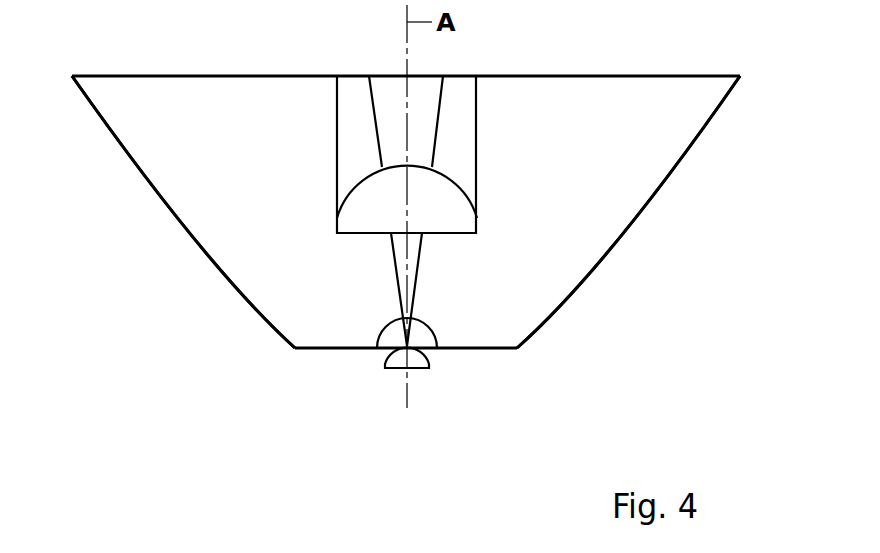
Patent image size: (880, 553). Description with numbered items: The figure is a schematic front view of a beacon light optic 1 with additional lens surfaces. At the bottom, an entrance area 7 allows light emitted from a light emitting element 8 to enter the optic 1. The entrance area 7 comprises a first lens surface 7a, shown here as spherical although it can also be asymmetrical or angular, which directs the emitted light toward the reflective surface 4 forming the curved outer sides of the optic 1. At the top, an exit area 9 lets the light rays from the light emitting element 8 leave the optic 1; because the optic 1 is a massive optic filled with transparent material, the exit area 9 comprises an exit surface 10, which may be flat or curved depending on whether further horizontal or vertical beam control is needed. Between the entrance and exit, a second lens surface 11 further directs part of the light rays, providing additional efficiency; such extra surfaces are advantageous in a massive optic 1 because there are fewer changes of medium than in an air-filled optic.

The optic 1 is at (622, 274).
The reflective surface 4 is at (605, 213).
The entrance area 7 is at (503, 348).
The first lens surface 7a is at (422, 325).
The light emitting element 8 is at (397, 361).
The exit area 9 is at (697, 76).
The exit surface 10 is at (583, 76).
The second lens surface 11 is at (450, 183).